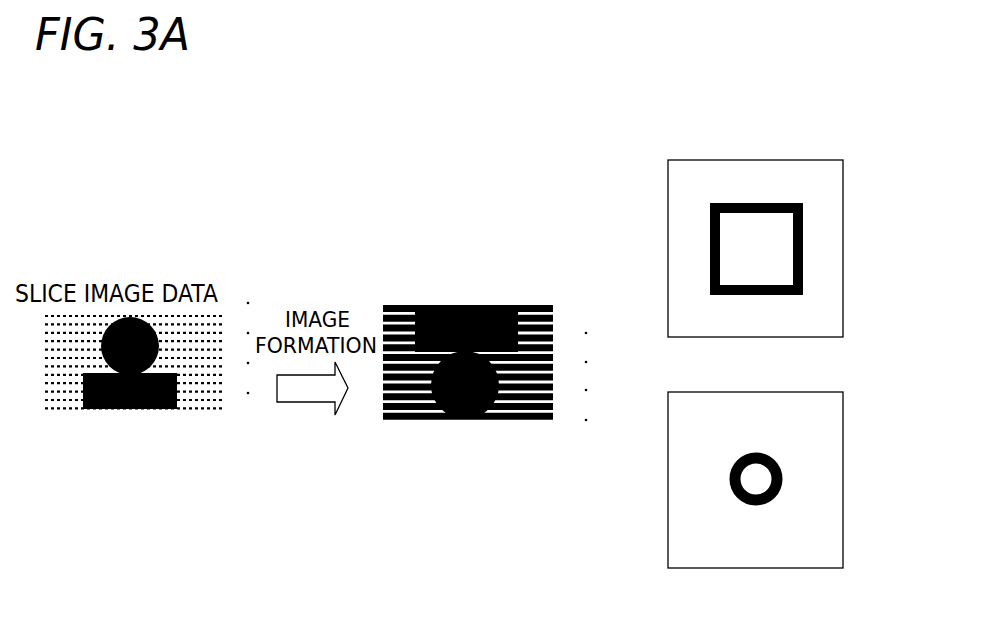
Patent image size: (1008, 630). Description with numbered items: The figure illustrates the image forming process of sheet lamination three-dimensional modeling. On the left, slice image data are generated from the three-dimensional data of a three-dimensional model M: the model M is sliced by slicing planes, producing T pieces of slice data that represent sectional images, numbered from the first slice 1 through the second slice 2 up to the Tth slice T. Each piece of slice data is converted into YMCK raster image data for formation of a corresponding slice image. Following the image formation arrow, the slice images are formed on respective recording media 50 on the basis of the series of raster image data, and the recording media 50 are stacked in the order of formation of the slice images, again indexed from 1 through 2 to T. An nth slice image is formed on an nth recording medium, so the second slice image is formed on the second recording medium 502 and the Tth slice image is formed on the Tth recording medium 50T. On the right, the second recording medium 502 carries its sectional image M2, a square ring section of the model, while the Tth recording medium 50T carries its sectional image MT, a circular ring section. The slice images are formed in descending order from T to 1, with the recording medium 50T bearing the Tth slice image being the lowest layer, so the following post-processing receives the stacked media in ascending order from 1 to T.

The recording media 50 is at (470, 299).
The second recording medium 502 is at (821, 160).
The Tth recording medium 50T is at (816, 392).
The 3D model M is at (118, 410).
The second slice image M2 is at (808, 245).
The T-th slice image MT is at (796, 480).
The first slice image number 1 is at (226, 407).
The second slice image number 2 is at (217, 400).
The Tth slice image number T is at (222, 316).